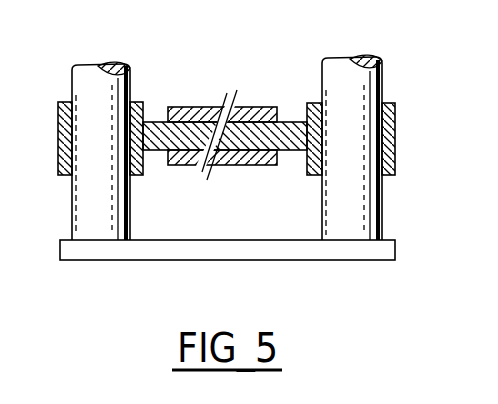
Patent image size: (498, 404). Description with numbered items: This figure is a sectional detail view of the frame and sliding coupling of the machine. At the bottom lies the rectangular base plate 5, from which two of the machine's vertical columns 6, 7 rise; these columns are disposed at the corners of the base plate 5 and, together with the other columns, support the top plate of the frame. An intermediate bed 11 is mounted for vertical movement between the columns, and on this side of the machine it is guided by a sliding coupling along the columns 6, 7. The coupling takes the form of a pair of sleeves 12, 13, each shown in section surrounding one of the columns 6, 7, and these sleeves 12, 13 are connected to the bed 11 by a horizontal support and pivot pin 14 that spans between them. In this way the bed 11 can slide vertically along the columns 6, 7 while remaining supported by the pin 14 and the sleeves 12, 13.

The base plate 5 is at (362, 253).
The vertical column 6 is at (365, 212).
The vertical column 7 is at (95, 203).
The intermediate bed 11 is at (250, 172).
The sleeve 12 is at (397, 118).
The sleeve 13 is at (63, 102).
The horizontal support and pivot pin 14 is at (292, 152).